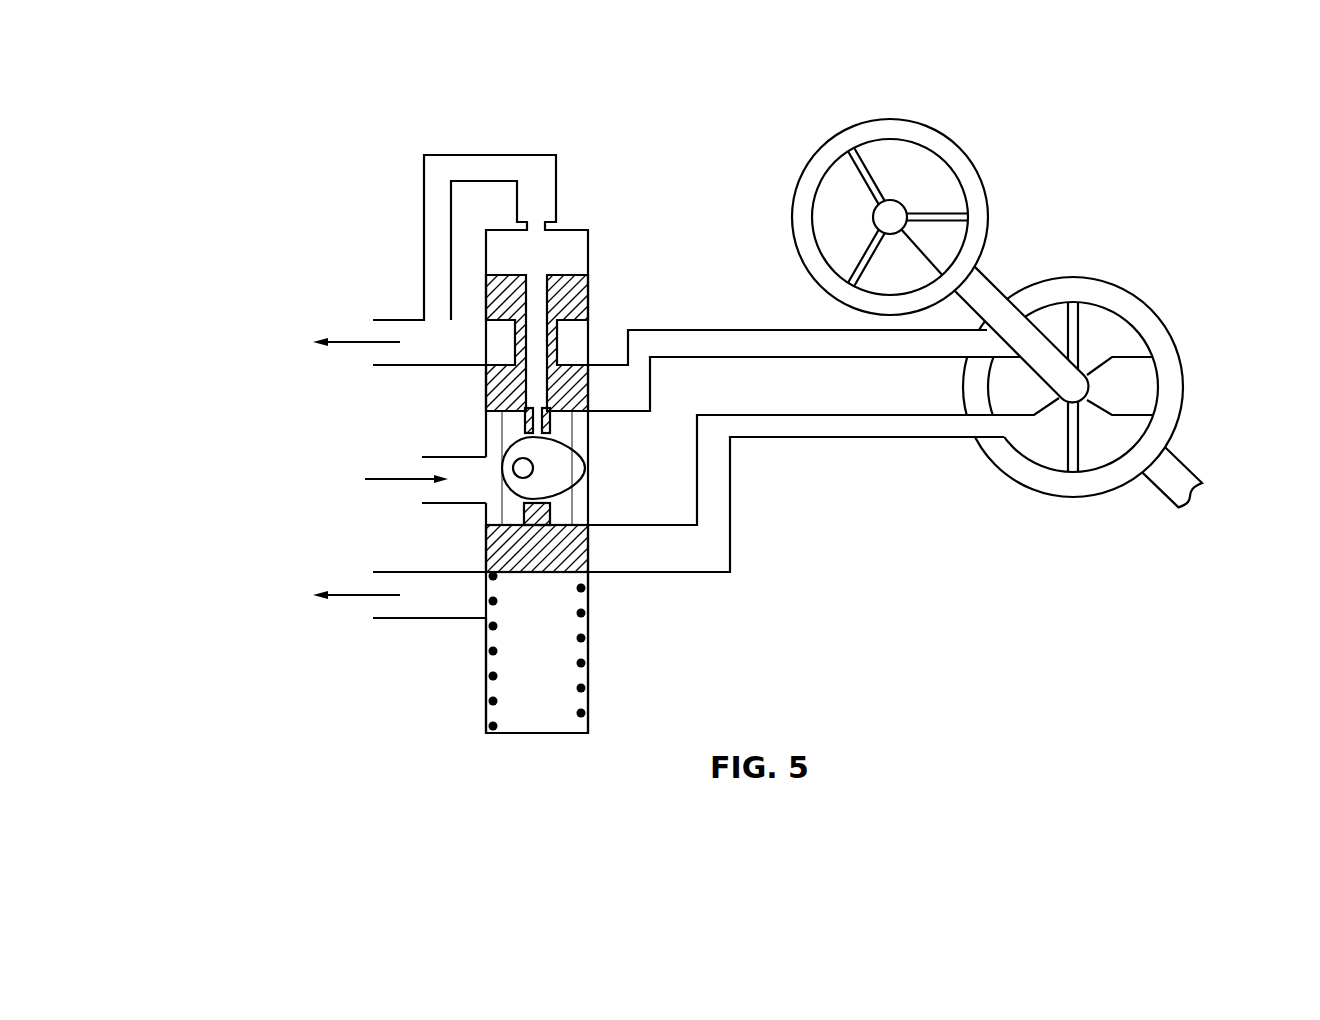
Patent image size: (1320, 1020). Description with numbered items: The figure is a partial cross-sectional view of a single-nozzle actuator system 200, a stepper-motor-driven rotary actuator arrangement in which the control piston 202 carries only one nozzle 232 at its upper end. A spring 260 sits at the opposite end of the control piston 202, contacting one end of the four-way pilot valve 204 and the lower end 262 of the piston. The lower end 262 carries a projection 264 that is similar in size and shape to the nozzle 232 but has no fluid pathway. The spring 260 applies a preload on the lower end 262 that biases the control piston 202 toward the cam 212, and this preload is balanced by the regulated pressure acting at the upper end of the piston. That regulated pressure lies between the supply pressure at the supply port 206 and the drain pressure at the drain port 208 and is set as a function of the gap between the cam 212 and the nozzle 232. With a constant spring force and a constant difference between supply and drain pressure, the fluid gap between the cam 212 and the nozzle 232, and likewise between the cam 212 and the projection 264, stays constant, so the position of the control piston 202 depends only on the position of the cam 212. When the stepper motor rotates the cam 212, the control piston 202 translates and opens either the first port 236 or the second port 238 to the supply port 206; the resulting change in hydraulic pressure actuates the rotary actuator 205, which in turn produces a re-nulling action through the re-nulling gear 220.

The single-nozzle actuator system 200 is at (262, 131).
The control piston 202 is at (573, 300).
The four-way pilot valve 204 is at (590, 432).
The rotary actuator 205 is at (1180, 347).
The supply port 206 is at (447, 500).
The drain port 208 is at (400, 366).
The cam 212 is at (522, 455).
The re-nulling gear 220 is at (983, 175).
The nozzle 232 is at (524, 428).
The first port 236 is at (600, 383).
The second port 238 is at (612, 557).
The spring 260 is at (492, 698).
The lower end 262 is at (537, 558).
The projection 264 is at (543, 513).